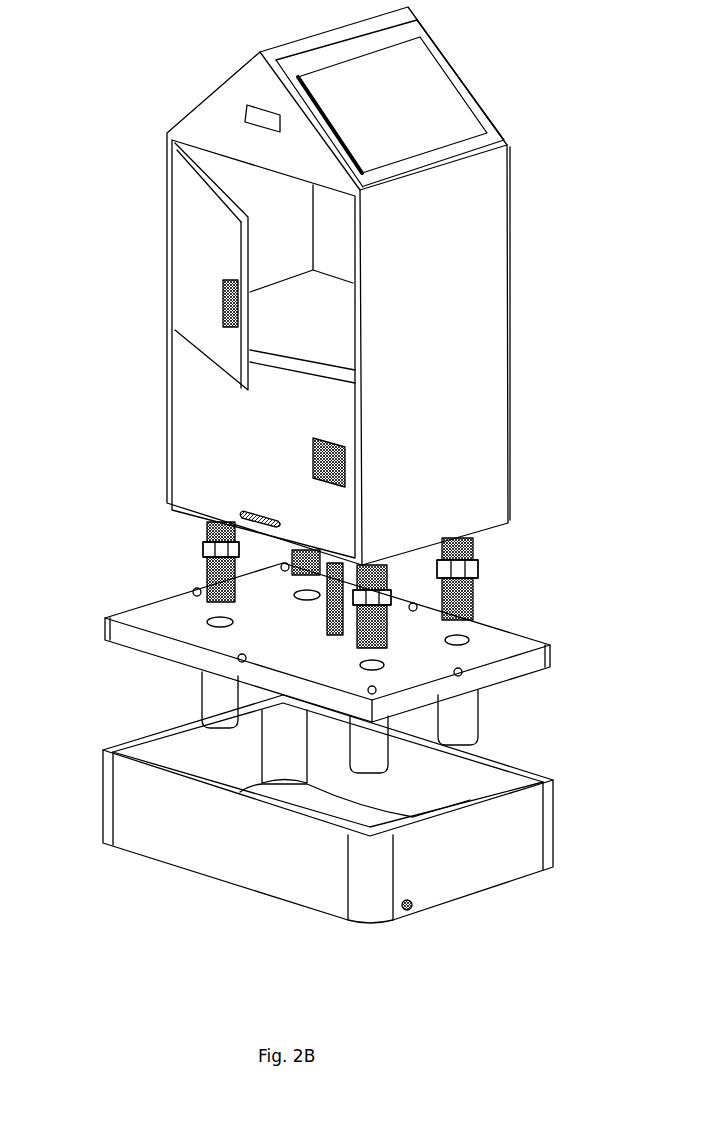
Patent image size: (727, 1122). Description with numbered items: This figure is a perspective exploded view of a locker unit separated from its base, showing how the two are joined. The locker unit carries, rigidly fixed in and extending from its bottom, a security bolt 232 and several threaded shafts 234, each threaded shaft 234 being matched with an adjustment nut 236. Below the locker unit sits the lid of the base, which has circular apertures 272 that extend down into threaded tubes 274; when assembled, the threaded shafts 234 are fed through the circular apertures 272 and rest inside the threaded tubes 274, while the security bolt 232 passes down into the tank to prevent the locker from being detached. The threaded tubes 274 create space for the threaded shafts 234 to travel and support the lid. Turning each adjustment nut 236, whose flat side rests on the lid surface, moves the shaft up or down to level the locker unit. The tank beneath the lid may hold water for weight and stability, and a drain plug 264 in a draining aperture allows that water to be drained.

The security bolt 232 is at (328, 620).
The threaded shaft 234 is at (208, 580).
The adjustment nut 236 is at (205, 548).
The drain plug 264 is at (412, 910).
The circular aperture 272 is at (470, 640).
The threaded tube 274 is at (480, 722).